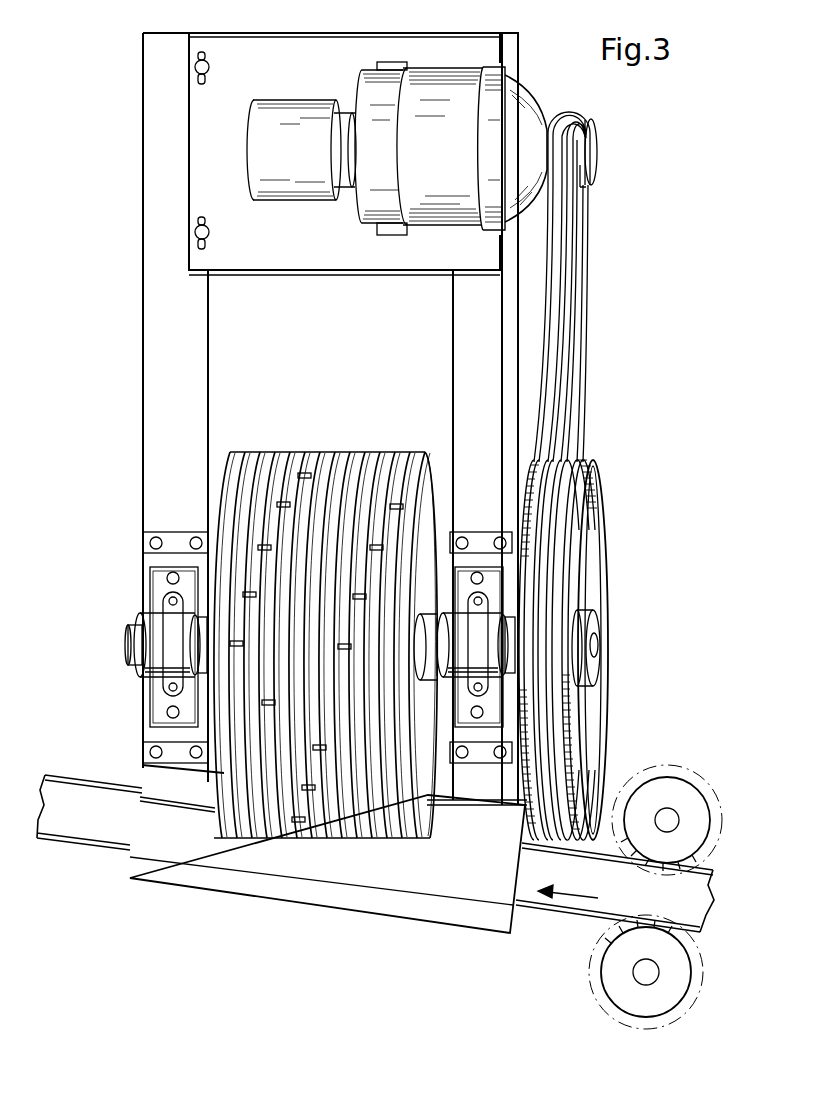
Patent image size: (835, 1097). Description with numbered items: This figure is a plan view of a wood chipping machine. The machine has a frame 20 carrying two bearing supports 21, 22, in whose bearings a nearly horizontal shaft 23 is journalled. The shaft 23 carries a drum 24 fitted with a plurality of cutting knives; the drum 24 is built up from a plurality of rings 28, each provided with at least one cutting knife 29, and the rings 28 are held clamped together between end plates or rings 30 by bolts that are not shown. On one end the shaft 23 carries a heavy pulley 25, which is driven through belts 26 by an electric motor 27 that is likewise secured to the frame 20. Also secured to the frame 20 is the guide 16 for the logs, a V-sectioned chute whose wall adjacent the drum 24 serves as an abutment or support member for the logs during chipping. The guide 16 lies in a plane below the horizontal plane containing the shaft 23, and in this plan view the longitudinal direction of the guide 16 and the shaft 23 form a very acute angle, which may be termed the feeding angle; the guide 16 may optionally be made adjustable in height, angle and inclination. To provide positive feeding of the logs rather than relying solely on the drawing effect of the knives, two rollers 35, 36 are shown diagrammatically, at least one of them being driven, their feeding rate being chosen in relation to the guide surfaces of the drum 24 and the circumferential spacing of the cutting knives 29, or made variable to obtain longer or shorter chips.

The guide 16 is at (418, 887).
The frame 20 is at (153, 403).
The bearing support 21 is at (147, 559).
The bearing support 22 is at (492, 518).
The shaft 23 is at (130, 641).
The drum 24 is at (325, 628).
The heavy pulley 25 is at (598, 507).
The belts 26 is at (582, 313).
The electric motor 27 is at (527, 92).
The rings 28 is at (300, 466).
The cutting knife 29 is at (373, 542).
The end plates 30 is at (220, 789).
The roller 35 is at (608, 963).
The roller 36 is at (663, 787).